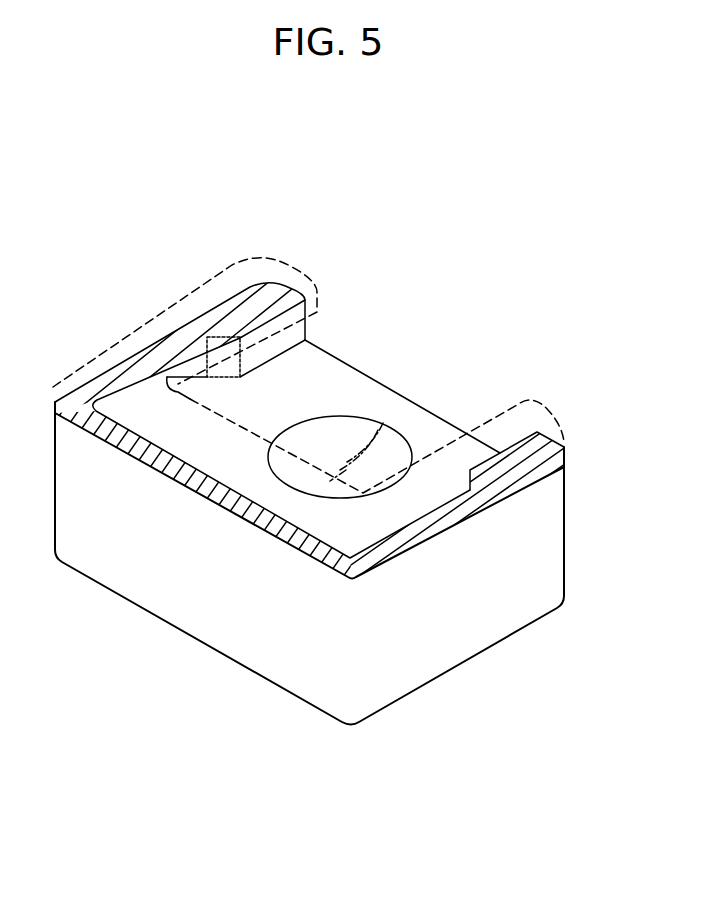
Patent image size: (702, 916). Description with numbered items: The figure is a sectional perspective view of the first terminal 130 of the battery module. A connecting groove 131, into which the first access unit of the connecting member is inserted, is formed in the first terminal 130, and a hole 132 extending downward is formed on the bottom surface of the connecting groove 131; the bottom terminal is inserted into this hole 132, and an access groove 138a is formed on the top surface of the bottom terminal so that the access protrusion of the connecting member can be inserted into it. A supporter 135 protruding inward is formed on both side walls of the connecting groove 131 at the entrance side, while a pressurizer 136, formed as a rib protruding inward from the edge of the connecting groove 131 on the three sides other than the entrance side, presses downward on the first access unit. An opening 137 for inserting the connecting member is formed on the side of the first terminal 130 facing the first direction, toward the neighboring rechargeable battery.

The first terminal 130 is at (135, 314).
The connecting groove 131 is at (432, 430).
The hole 132 is at (360, 417).
The supporter 135 is at (267, 330).
The pressurizer 136 is at (307, 274).
The opening 137 is at (413, 400).
The access groove 138a is at (343, 433).